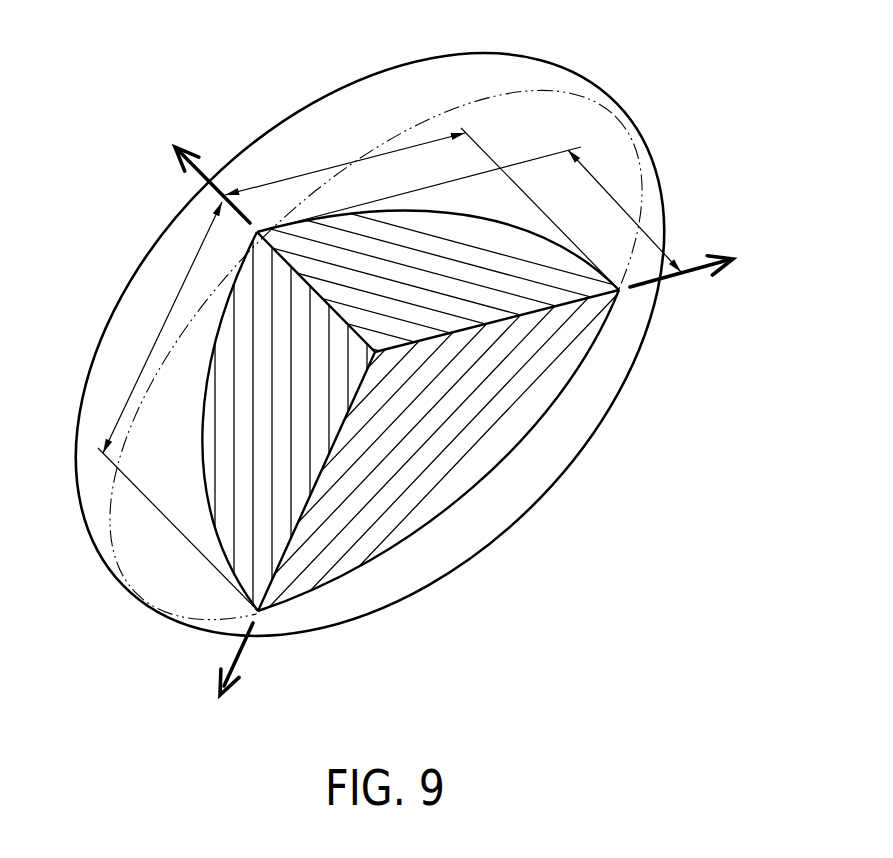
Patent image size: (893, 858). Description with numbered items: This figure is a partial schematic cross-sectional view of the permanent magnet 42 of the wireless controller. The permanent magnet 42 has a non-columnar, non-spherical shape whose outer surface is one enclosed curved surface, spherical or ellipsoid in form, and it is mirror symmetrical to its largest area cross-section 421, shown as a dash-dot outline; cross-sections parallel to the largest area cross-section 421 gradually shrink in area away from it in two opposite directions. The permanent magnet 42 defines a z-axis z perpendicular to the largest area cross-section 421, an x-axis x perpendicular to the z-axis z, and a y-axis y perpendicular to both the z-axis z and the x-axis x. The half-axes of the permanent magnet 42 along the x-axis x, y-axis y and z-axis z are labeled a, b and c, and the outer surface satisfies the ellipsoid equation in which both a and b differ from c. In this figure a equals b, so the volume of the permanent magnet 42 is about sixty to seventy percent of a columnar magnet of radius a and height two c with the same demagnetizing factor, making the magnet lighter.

The permanent magnet 42 is at (140, 251).
The largest area cross-section 421 is at (513, 87).
The half-axis along the x-axis a is at (178, 406).
The half-axis along the y-axis b is at (422, 209).
The half-axis along the z-axis c is at (469, 209).
The x-axis x is at (231, 673).
The y-axis y is at (690, 266).
The z-axis z is at (203, 175).